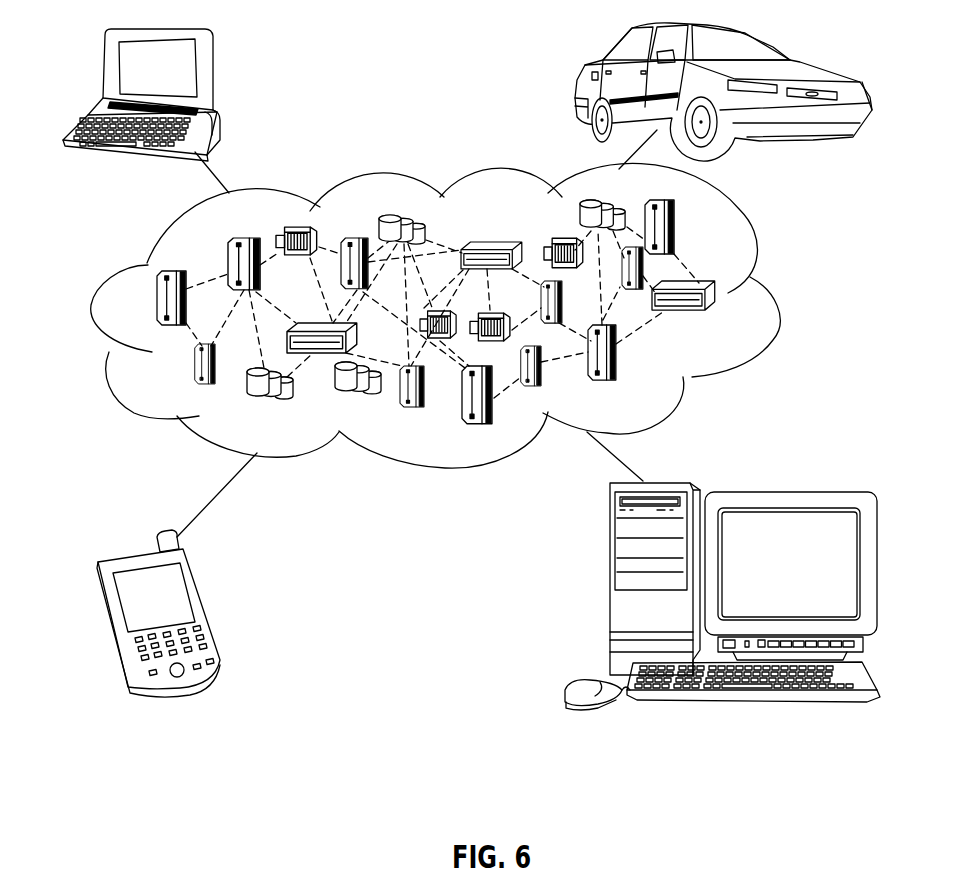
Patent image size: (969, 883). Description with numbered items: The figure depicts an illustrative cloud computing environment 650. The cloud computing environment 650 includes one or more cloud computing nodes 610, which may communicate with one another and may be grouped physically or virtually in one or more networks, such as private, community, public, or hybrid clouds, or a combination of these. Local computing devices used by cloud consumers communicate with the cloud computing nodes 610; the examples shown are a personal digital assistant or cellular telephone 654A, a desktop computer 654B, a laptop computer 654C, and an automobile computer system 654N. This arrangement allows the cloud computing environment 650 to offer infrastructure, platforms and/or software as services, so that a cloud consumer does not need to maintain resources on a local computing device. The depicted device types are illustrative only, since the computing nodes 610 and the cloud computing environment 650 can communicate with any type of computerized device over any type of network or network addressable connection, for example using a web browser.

The cloud computing environment 650 is at (755, 260).
The cloud computing nodes 610 is at (747, 318).
The personal digital assistant or cellular telephone 654A is at (207, 605).
The desktop computer 654B is at (608, 585).
The laptop computer 654C is at (213, 78).
The automobile computer system 654N is at (583, 77).